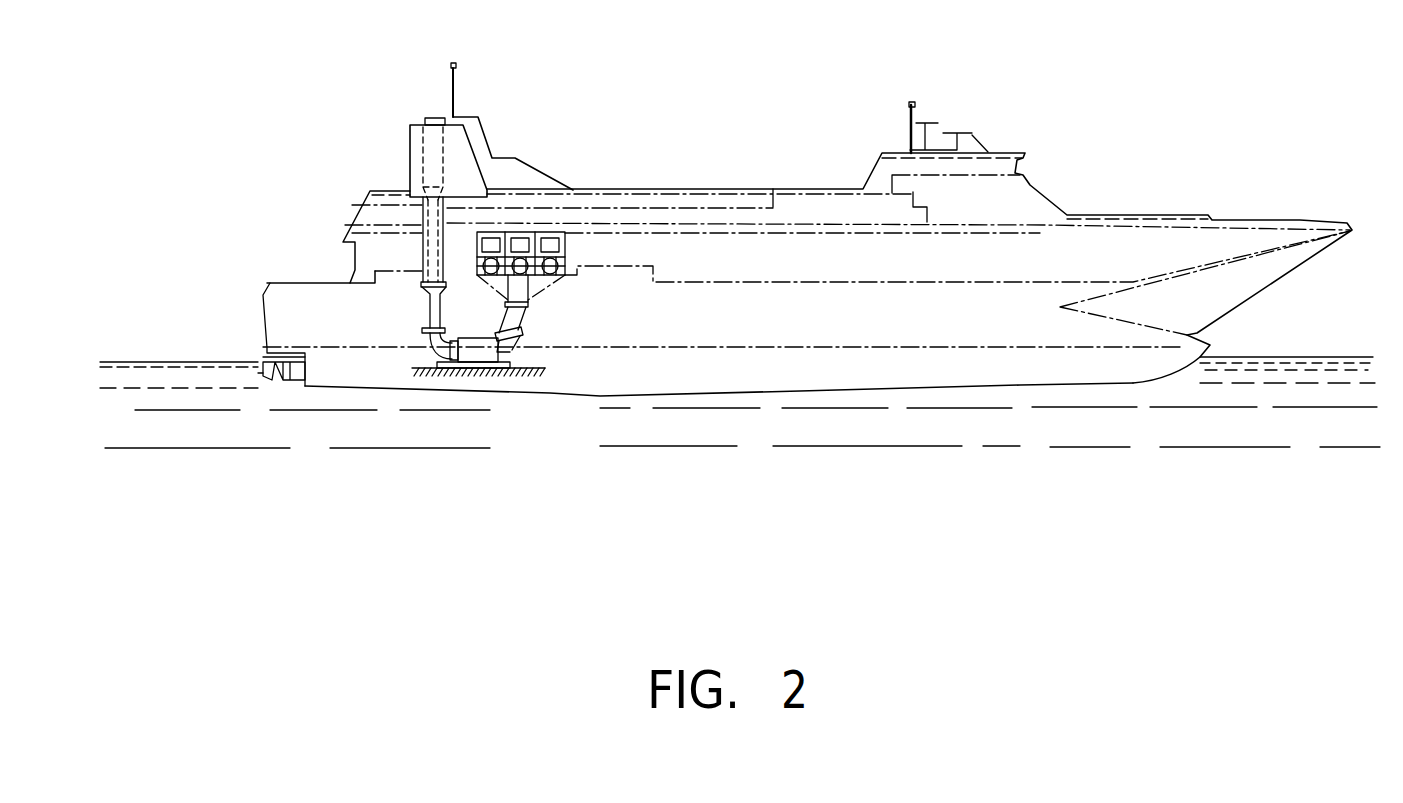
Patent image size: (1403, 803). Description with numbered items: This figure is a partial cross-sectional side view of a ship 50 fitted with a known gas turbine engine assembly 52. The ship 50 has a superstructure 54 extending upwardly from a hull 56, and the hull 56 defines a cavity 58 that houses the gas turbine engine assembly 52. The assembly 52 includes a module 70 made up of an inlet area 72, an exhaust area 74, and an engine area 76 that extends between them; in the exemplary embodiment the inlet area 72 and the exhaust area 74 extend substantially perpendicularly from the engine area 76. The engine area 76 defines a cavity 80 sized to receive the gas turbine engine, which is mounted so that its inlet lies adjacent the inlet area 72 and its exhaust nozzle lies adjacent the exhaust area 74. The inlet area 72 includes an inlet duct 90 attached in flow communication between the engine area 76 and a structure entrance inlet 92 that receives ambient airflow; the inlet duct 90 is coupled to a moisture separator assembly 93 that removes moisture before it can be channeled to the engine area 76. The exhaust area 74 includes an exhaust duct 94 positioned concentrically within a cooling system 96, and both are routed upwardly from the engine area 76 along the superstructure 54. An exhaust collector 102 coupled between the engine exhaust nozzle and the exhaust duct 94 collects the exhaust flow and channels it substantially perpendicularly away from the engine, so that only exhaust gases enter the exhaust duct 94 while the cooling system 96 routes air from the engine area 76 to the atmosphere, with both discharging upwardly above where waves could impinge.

The ship 50 is at (318, 80).
The gas turbine engine assembly 52 is at (512, 398).
The superstructure 54 is at (475, 147).
The hull 56 is at (690, 253).
The cavity 58 is at (580, 338).
The module 70 is at (435, 400).
The inlet area 72 is at (528, 303).
The exhaust area 74 is at (424, 295).
The engine area 76 is at (470, 358).
The cavity 80 is at (404, 333).
The inlet duct 90 is at (513, 318).
The structure entrance inlet 92 is at (553, 235).
The moisture separator assembly 93 is at (567, 265).
The exhaust duct 94 is at (422, 255).
The cooling system 96 is at (422, 212).
The exhaust collector 102 is at (425, 359).